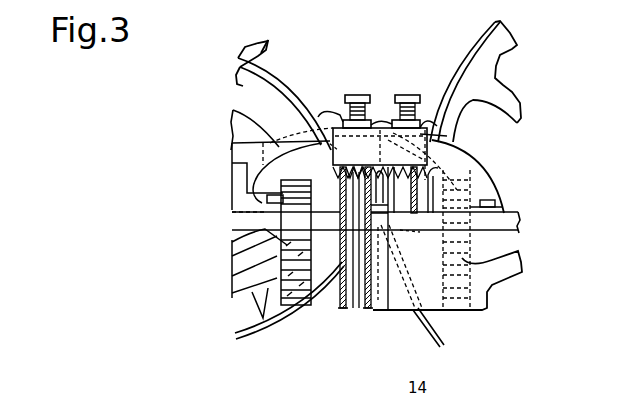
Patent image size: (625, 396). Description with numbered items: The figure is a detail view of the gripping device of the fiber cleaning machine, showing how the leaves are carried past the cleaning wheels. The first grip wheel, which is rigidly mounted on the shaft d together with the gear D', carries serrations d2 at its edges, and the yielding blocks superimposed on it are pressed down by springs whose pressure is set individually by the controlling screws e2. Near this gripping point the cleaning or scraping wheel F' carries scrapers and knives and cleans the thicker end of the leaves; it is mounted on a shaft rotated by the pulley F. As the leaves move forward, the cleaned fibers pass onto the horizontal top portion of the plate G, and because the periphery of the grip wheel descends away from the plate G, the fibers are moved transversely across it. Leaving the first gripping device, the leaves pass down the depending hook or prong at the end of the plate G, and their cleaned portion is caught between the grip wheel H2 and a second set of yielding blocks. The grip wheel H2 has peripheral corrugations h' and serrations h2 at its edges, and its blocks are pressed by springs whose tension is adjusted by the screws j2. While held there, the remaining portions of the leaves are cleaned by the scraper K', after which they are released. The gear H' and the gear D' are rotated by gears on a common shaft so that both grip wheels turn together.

The cleaning or scraping wheel F' is at (283, 93).
The pulley F is at (255, 119).
The screws j2 is at (369, 88).
The controlling screws e2 is at (414, 95).
The scraper K' is at (457, 117).
The plate G is at (372, 153).
The grip wheel H2 is at (346, 258).
The gear H' is at (289, 303).
The peripheral corrugations h' is at (356, 258).
The serrations h2 is at (343, 308).
The shaft d is at (396, 255).
The serrations d2 is at (436, 238).
The gear D' is at (447, 257).